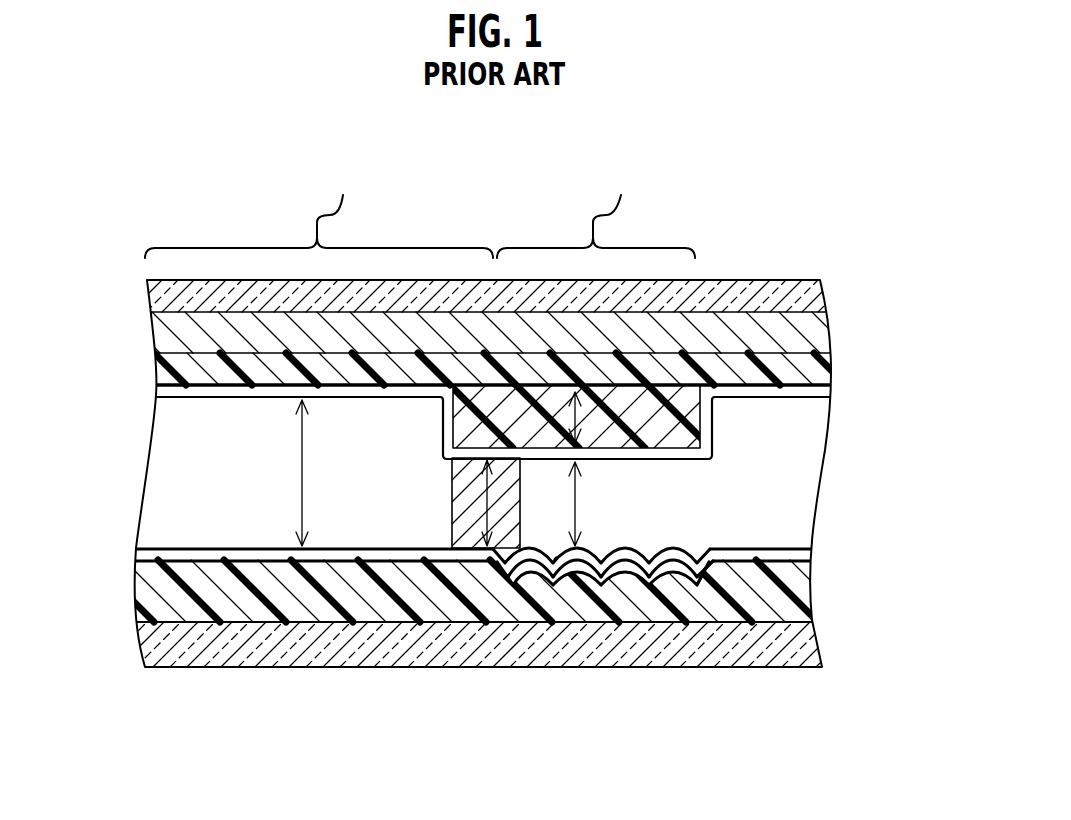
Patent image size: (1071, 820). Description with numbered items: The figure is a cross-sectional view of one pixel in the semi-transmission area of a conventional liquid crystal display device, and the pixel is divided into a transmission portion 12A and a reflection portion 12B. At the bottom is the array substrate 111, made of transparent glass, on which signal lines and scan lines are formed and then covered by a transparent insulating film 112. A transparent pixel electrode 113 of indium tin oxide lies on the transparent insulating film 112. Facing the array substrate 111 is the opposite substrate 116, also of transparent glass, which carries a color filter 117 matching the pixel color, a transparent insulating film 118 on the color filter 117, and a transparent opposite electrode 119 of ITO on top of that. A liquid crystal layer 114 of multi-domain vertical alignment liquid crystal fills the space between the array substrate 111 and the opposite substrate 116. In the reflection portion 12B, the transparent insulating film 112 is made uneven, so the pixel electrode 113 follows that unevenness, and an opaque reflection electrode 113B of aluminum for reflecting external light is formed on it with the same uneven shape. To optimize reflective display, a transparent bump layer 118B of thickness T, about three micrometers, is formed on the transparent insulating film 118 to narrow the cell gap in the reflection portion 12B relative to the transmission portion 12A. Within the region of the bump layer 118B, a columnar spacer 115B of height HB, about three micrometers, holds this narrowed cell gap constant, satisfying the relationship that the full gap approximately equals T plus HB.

The array substrate 111 is at (805, 637).
The transparent insulating film 112 is at (805, 590).
The transparent pixel electrode 113 is at (785, 550).
The opaque reflection electrode 113B is at (663, 547).
The liquid crystal layer 114 is at (800, 480).
The columnar spacer 115B is at (452, 512).
The opposite substrate 116 is at (818, 290).
The color filter 117 is at (812, 330).
The transparent insulating film 118 is at (828, 364).
The transparent bump layer 118B is at (688, 423).
The transparent opposite electrode 119 is at (815, 402).
The transmission portion 12A is at (319, 204).
The reflection portion 12B is at (596, 204).